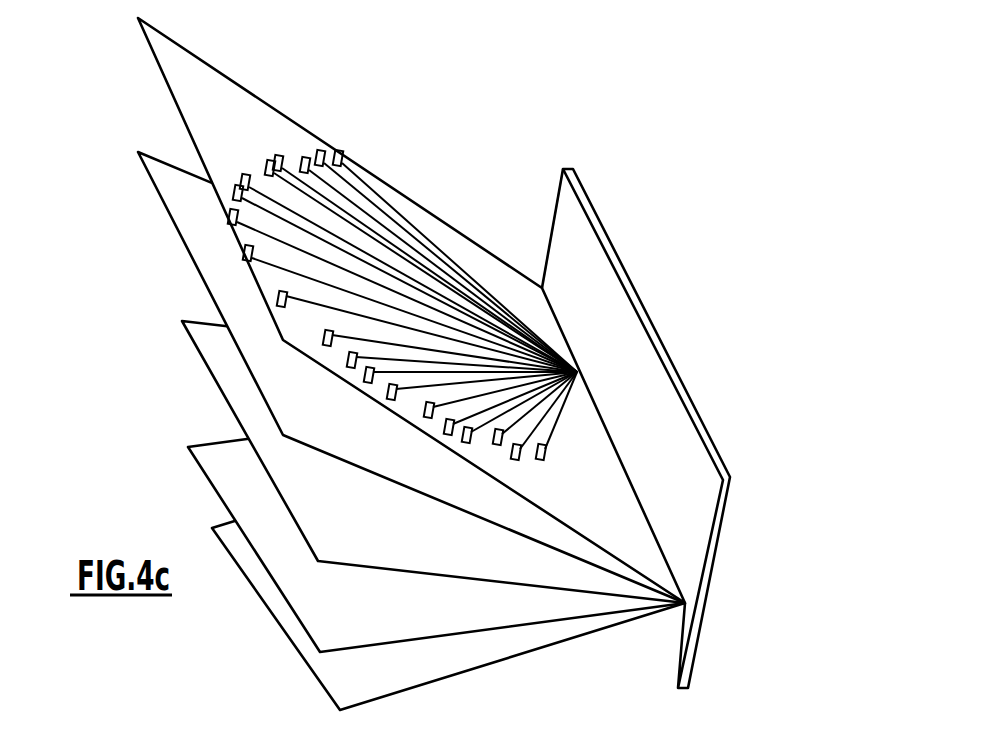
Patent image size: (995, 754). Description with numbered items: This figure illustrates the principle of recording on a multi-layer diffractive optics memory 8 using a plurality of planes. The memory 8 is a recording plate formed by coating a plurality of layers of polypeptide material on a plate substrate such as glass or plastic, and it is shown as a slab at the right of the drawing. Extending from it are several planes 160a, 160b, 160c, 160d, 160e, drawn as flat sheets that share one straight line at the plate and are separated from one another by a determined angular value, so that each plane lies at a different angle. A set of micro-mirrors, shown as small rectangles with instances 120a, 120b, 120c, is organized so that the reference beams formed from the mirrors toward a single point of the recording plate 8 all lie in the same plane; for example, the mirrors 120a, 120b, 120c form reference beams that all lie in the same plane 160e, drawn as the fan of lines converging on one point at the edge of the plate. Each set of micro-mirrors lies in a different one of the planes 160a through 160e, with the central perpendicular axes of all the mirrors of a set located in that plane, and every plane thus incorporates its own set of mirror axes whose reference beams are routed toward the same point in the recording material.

The multi-layer diffractive optics memory 8 is at (667, 368).
The mirror 120a is at (545, 459).
The mirror 120b is at (245, 258).
The mirror 120c is at (320, 150).
The plane 160a is at (355, 693).
The plane 160b is at (210, 453).
The plane 160c is at (205, 342).
The plane 160d is at (157, 190).
The plane 160e is at (167, 57).